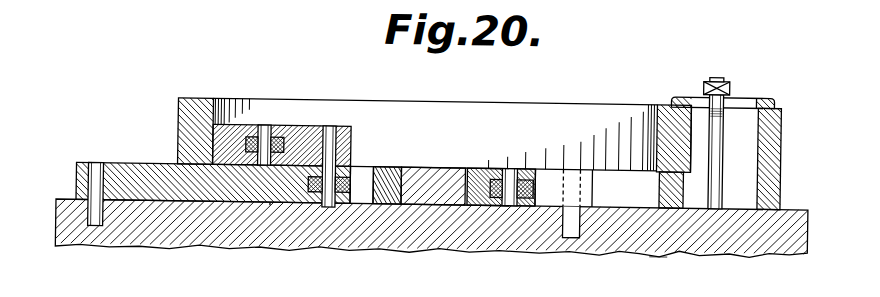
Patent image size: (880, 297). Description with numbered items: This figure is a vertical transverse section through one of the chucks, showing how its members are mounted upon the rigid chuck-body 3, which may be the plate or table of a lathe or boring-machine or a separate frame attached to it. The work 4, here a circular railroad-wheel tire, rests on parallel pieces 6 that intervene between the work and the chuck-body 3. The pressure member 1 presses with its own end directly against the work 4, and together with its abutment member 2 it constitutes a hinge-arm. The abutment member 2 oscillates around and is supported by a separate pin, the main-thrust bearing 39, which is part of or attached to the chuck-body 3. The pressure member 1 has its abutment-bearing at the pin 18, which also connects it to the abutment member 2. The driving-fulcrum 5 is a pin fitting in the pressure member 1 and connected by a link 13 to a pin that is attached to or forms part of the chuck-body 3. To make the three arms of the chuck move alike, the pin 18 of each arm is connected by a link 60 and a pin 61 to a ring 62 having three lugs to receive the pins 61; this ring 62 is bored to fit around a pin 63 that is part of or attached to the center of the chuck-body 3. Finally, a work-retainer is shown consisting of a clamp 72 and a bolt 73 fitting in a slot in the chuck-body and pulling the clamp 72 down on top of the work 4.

The pressure member 1 is at (270, 202).
The abutment member 2 is at (136, 161).
The chuck-body 3 is at (162, 246).
The work 4 is at (200, 95).
The driving-fulcrum 5 is at (262, 121).
The parallel piece 6 is at (657, 249).
The link 13 is at (270, 202).
The pin 18 is at (333, 119).
The main-thrust bearing 39 is at (92, 161).
The link 60 is at (362, 161).
The pin 61 is at (510, 159).
The ring 62 is at (388, 161).
The pin 63 is at (435, 160).
The clamp 72 is at (726, 141).
The bolt 73 is at (718, 70).